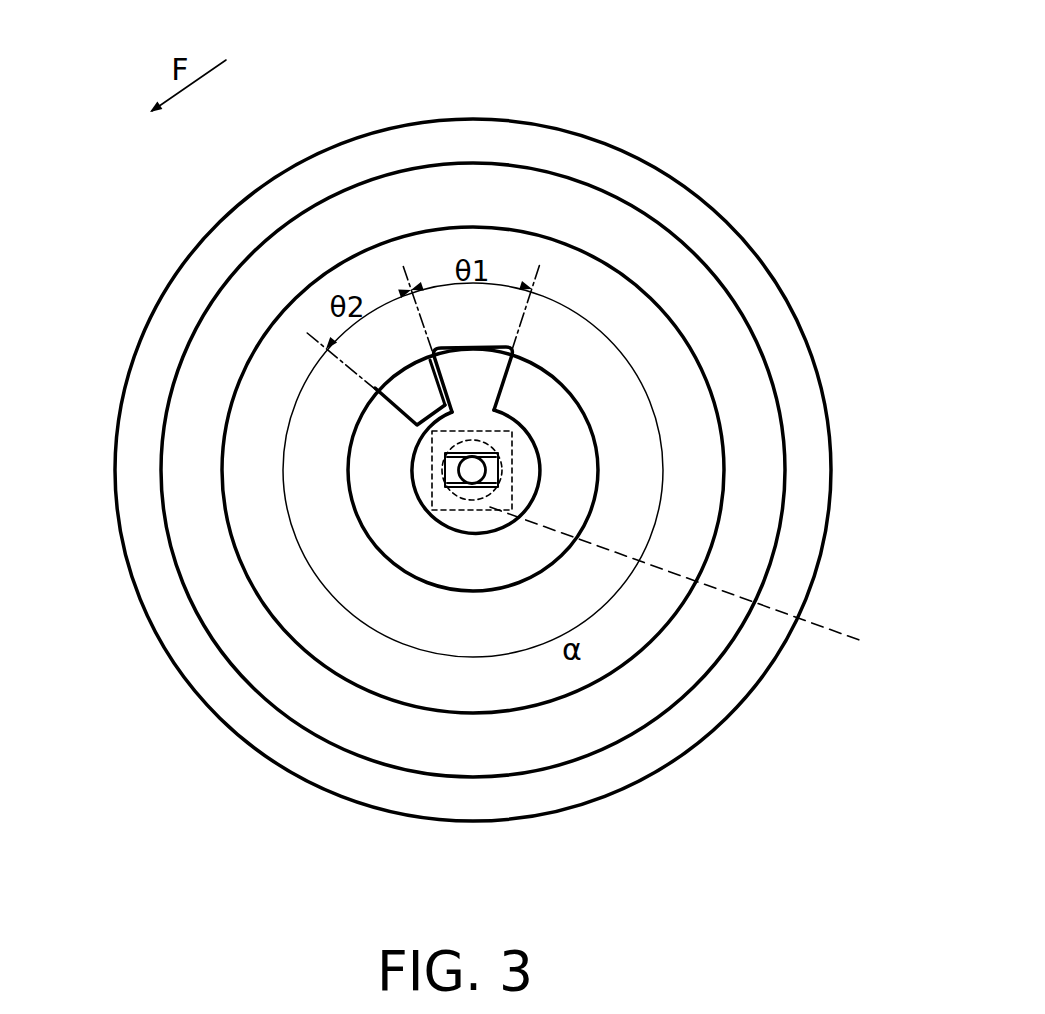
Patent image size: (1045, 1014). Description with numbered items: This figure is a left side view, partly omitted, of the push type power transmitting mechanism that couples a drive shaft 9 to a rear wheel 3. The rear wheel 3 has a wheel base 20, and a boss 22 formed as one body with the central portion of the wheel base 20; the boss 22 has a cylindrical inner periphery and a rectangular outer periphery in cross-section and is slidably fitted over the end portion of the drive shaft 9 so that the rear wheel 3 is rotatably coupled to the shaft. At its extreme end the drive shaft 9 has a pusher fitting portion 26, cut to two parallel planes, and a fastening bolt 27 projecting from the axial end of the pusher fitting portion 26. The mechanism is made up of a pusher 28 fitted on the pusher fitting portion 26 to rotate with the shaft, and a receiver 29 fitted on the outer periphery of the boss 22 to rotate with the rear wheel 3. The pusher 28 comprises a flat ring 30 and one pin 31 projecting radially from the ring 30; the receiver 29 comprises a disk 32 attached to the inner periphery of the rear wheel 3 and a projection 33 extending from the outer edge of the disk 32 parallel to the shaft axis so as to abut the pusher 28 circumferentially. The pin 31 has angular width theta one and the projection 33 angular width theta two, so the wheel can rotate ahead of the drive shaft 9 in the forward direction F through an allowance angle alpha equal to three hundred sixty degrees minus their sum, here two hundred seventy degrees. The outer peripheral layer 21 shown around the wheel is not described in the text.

The rear wheel 3 is at (803, 305).
The drive shaft 9 is at (458, 467).
The wheel base 20 is at (698, 532).
The outer peripheral layer 21 is at (822, 474).
The boss 22 is at (697, 581).
The pusher fitting portion 26 is at (497, 474).
The fastening bolt 27 is at (474, 470).
The pusher 28 is at (517, 347).
The receiver 29 is at (410, 430).
The ring 30 is at (407, 450).
The pin 31 is at (455, 349).
The disk 32 is at (355, 467).
The projection 33 is at (398, 380).